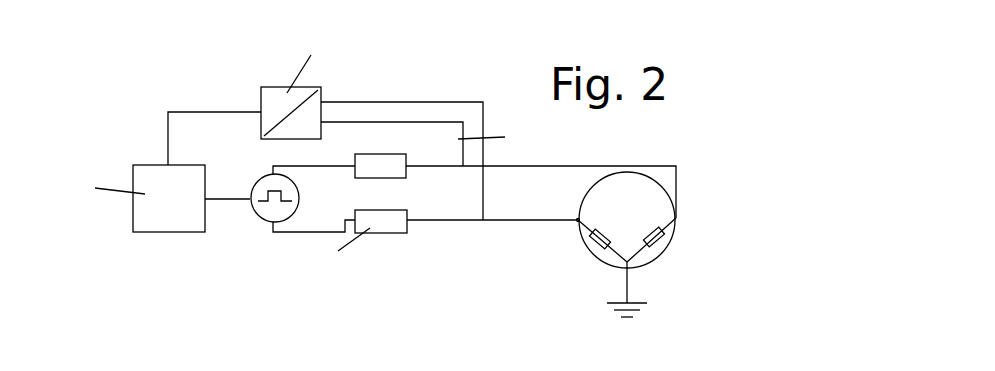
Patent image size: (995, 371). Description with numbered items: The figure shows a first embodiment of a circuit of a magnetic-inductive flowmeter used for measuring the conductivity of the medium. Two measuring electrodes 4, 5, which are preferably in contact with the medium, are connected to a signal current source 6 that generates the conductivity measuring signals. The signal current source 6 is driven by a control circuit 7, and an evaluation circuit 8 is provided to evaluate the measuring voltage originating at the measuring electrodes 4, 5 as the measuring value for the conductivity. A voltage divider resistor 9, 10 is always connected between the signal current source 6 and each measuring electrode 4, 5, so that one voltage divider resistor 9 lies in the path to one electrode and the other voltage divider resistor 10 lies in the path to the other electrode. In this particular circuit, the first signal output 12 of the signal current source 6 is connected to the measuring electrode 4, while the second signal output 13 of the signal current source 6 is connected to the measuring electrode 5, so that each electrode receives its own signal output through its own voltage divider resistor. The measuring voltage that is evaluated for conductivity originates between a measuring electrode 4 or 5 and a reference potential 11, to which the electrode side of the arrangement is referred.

The measuring electrode 4 is at (679, 222).
The measuring electrode 5 is at (578, 222).
The signal current source 6 is at (262, 219).
The control circuit 7 is at (138, 172).
The evaluation circuit 8 is at (261, 105).
The voltage divider resistor 9 is at (406, 155).
The voltage divider resistor 10 is at (392, 233).
The reference potential 11 is at (608, 303).
The first signal output 12 is at (266, 175).
The second signal output 13 is at (272, 222).